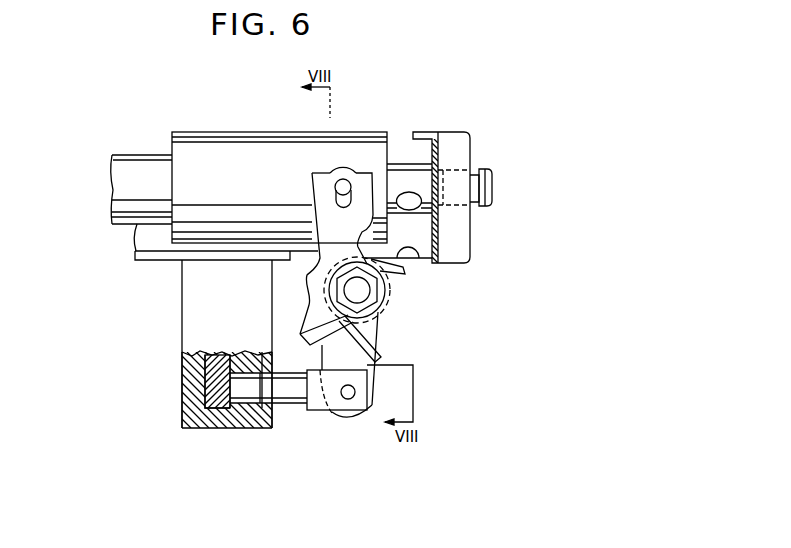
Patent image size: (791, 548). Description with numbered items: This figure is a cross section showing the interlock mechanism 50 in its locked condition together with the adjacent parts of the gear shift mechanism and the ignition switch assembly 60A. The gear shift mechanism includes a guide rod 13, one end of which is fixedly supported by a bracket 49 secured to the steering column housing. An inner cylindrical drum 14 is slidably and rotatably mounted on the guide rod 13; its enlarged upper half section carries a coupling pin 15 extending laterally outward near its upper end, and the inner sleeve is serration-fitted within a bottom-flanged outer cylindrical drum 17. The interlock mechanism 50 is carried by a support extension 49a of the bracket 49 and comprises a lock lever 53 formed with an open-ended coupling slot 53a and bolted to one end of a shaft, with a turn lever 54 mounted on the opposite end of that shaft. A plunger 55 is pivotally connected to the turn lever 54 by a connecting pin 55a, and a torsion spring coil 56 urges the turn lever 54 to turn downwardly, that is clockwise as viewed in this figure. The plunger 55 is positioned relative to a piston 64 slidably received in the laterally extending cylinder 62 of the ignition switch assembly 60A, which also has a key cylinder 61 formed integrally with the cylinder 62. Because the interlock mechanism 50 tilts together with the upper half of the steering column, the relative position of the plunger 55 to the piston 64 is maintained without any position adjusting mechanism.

The guide rod 13 is at (400, 164).
The inner cylindrical drum 14 is at (145, 160).
The coupling pin 15 is at (332, 171).
The outer cylindrical drum 17 is at (222, 143).
The bracket 49 is at (457, 140).
The support extension 49a is at (413, 248).
The interlock mechanism 50 is at (363, 252).
The lock lever 53 is at (315, 210).
The coupling slot 53a is at (343, 186).
The turn lever 54 is at (365, 428).
The plunger 55 is at (290, 403).
The connecting pin 55a is at (350, 398).
The torsion spring coil 56 is at (380, 339).
The ignition switch assembly 60A is at (168, 344).
The key cylinder 61 is at (145, 245).
The laterally extending cylinder 62 is at (180, 292).
The piston 64 is at (207, 393).